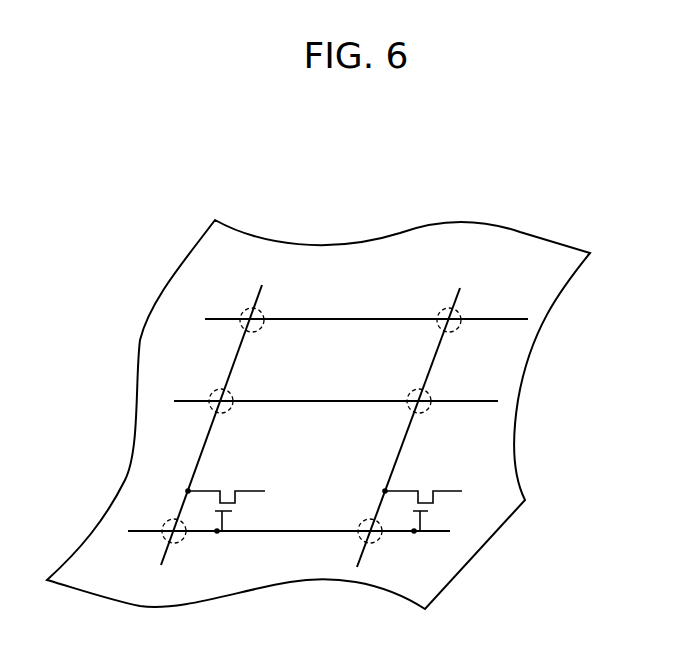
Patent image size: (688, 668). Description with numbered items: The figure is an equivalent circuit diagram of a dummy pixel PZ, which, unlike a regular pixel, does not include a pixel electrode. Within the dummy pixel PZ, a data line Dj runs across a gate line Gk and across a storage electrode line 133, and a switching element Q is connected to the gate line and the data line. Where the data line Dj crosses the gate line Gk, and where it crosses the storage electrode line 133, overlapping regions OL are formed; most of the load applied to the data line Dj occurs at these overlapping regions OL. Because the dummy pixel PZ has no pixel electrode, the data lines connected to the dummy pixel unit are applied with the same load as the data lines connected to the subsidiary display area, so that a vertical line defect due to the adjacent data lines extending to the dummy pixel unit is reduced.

The dummy pixel PZ is at (497, 200).
The j-th data line Dj is at (217, 414).
The k-th gate line Gk is at (288, 520).
The storage electrode line 133 is at (467, 401).
The overlapping region OL is at (261, 312).
The switching element Q is at (324, 511).